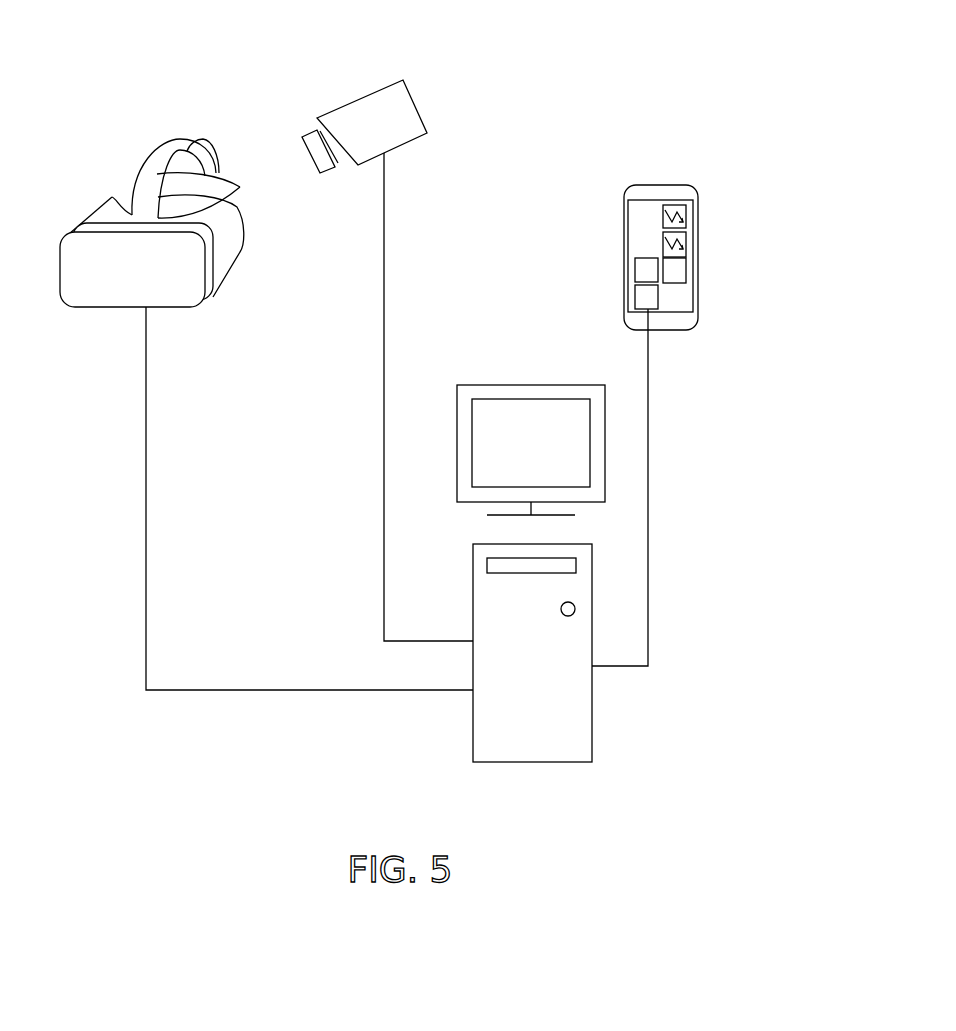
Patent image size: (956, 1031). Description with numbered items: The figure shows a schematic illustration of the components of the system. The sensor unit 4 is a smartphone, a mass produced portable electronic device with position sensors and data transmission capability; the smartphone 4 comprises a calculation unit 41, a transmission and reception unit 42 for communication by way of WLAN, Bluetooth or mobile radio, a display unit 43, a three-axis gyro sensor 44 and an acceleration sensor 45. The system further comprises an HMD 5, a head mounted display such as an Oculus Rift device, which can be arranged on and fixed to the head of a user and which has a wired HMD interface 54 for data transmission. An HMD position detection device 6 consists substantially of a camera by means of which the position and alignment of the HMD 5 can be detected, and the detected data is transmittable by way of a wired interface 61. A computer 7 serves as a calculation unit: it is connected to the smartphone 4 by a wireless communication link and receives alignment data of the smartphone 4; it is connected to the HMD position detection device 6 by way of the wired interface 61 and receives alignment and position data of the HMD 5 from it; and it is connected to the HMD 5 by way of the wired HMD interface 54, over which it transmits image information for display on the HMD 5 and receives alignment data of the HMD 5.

The sensor unit 4 is at (680, 185).
The calculation unit 41 is at (635, 270).
The transmission and reception unit 42 is at (635, 293).
The display unit 43 is at (687, 263).
The three-axis gyro sensor 44 is at (687, 240).
The acceleration sensor 45 is at (687, 210).
The HMD 5 is at (230, 198).
The wired HMD interface 54 is at (146, 520).
The HMD position detection device 6 is at (397, 80).
The wired interface 61 is at (385, 442).
The computer 7 is at (593, 632).